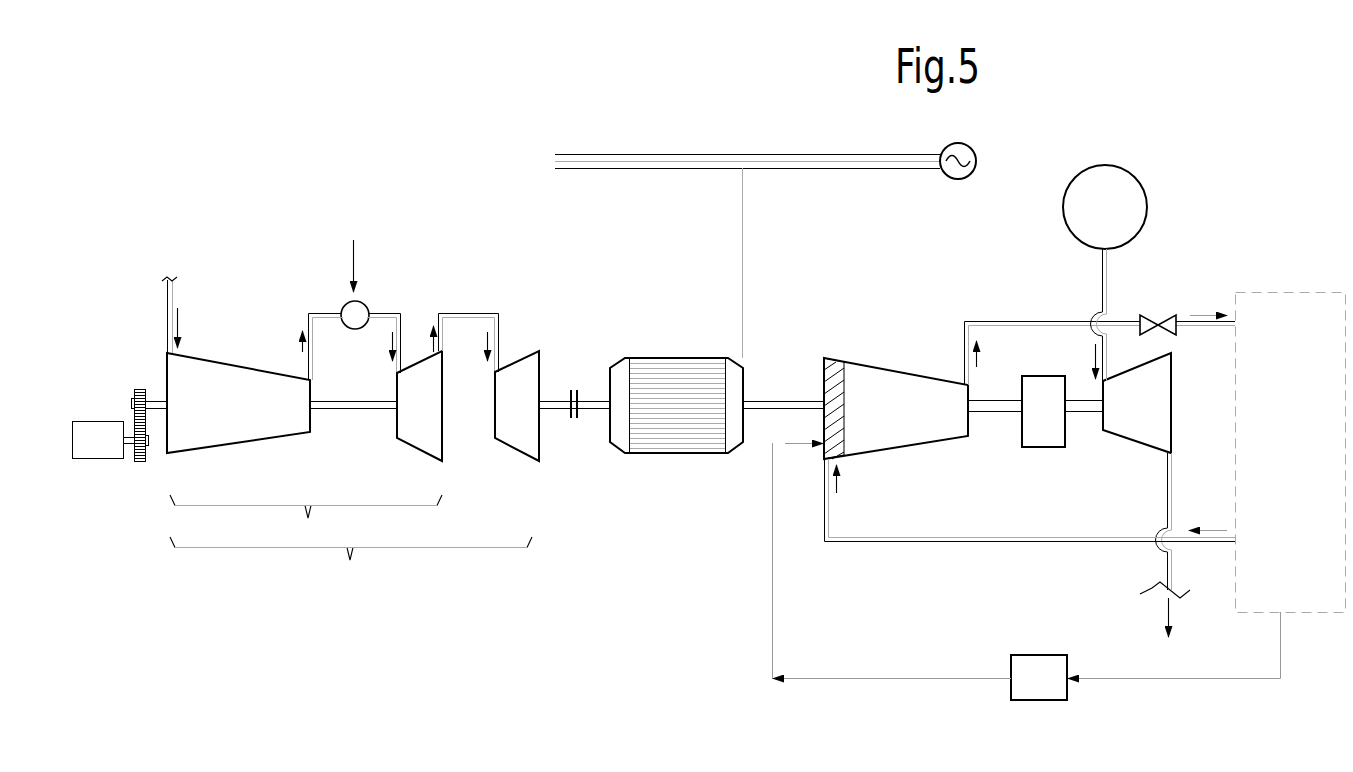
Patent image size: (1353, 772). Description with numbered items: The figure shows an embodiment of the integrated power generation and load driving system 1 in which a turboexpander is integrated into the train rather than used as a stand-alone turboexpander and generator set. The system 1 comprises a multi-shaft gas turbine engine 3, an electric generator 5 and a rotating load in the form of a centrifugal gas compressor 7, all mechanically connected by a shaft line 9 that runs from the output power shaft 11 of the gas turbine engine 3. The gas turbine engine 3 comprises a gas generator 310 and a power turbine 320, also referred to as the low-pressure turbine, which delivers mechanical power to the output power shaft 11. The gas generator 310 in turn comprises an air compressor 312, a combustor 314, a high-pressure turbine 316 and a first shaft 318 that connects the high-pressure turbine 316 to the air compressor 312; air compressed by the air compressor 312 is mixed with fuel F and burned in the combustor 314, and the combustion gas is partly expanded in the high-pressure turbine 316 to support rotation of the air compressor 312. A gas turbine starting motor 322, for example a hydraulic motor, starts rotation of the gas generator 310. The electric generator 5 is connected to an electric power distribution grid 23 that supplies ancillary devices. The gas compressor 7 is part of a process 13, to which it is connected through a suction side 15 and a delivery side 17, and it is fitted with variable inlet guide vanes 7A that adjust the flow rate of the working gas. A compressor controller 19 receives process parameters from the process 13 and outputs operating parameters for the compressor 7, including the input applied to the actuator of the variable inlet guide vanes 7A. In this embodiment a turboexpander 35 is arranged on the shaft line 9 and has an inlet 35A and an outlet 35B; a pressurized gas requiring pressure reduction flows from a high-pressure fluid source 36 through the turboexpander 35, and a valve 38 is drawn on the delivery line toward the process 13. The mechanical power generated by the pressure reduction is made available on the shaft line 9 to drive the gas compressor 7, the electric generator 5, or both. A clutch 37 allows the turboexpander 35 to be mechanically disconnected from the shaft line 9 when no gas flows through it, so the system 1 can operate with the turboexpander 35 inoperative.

The integrated power generation and load driving system 1 is at (706, 548).
The multi-shaft gas turbine engine 3 is at (351, 560).
The electric generator 5 is at (665, 356).
The centrifugal gas compressor 7 is at (902, 368).
The variable inlet guide vanes 7A is at (829, 362).
The shaft line 9 is at (588, 412).
The output power shaft 11 is at (558, 398).
The process 13 is at (1318, 279).
The suction side 15 is at (1041, 542).
The delivery side 17 is at (1012, 318).
The compressor controller 19 is at (1046, 690).
The electric power distribution grid 23 is at (654, 170).
The turboexpander 35 is at (1160, 408).
The inlet 35A is at (1102, 272).
The outlet 35B is at (1168, 520).
The high-pressure fluid source 36 is at (1127, 180).
The clutch 37 is at (1045, 447).
The valve 38 is at (1168, 318).
The gas generator 310 is at (287, 466).
The air compressor 312 is at (222, 372).
The combustor 314 is at (362, 306).
The high-pressure turbine 316 is at (418, 430).
The first shaft 318 is at (352, 401).
The power turbine 320 is at (520, 368).
The gas turbine starting motor 322 is at (111, 411).
The fuel F is at (353, 262).